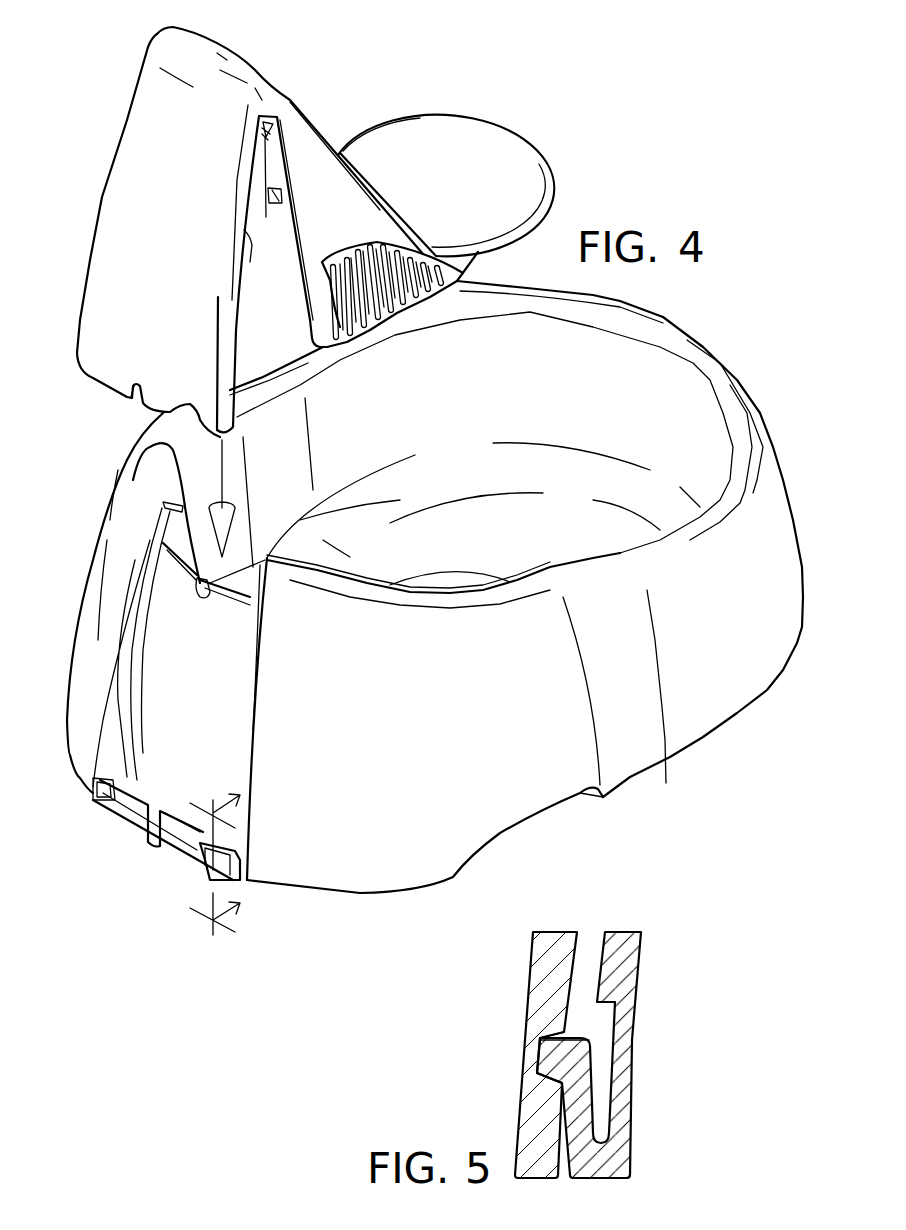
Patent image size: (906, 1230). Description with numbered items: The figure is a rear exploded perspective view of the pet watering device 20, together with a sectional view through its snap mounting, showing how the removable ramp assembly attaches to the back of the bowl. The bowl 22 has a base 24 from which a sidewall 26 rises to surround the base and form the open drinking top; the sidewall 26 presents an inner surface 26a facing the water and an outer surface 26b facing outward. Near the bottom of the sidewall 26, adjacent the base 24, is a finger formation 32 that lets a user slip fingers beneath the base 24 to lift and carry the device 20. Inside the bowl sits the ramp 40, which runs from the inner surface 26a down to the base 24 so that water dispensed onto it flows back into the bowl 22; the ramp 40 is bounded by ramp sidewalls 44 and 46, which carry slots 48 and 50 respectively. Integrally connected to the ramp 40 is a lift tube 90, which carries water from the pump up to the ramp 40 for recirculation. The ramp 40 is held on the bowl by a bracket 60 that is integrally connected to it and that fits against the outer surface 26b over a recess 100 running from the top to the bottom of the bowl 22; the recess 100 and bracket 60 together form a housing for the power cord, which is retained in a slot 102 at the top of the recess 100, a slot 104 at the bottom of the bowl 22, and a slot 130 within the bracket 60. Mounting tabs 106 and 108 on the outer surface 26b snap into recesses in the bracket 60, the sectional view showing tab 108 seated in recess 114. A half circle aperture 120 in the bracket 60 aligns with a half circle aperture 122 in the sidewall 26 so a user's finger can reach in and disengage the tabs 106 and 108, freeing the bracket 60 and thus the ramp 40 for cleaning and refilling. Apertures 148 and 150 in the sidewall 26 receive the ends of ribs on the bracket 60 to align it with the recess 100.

In FIG. 4, the pet watering device 20 is at (592, 138).
In FIG. 4, the bowl 22 is at (627, 703).
In FIG. 4, the base 24 is at (524, 551).
In FIG. 4, the sidewall 26 is at (730, 672).
In FIG. 4, the inner surface 26a is at (546, 401).
In FIG. 4, the outer surface 26b is at (113, 540).
In FIG. 5, the outer surface 26b is at (623, 1058).
In FIG. 4, the finger recess 32 is at (503, 827).
In FIG. 4, the ramp 40 is at (457, 173).
In FIG. 4, the ramp sidewall 44 is at (310, 173).
In FIG. 4, the ramp sidewall 46 is at (270, 163).
In FIG. 4, the slot 48 is at (417, 287).
In FIG. 4, the slot 50 is at (282, 198).
In FIG. 4, the bracket 60 is at (173, 229).
In FIG. 5, the bracket 60 is at (530, 1018).
In FIG. 4, the lift tube 90 is at (248, 236).
In FIG. 4, the recess 100 is at (216, 671).
In FIG. 4, the slot 102 is at (207, 600).
In FIG. 4, the slot 104 is at (150, 840).
In FIG. 4, the mounting tab 106 is at (107, 803).
In FIG. 4, the mounting tab 108 is at (203, 867).
In FIG. 5, the mounting tab 108 is at (593, 1107).
In FIG. 5, the recess 114 is at (542, 1042).
In FIG. 4, the half circle aperture 120 is at (187, 407).
In FIG. 4, the half circle aperture 122 is at (187, 867).
In FIG. 4, the slot 130 is at (130, 402).
In FIG. 4, the aperture 148 is at (137, 793).
In FIG. 4, the aperture 150 is at (203, 833).